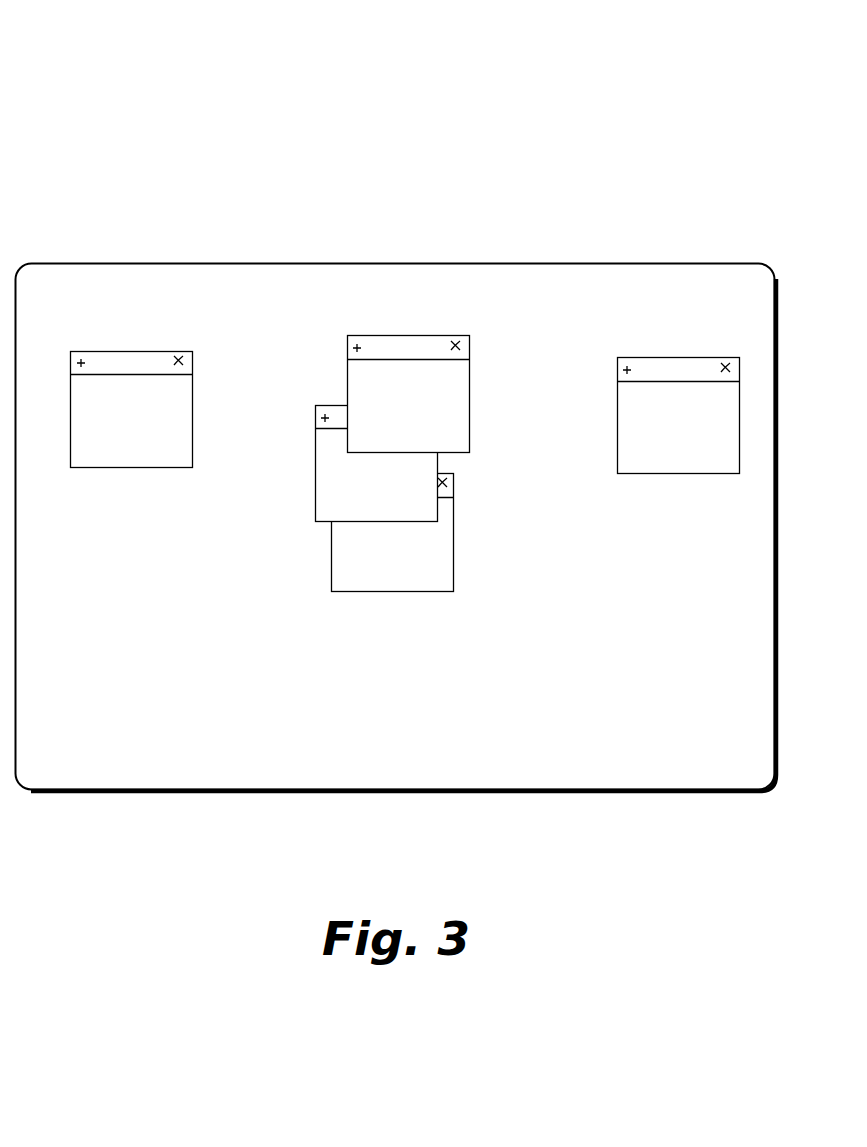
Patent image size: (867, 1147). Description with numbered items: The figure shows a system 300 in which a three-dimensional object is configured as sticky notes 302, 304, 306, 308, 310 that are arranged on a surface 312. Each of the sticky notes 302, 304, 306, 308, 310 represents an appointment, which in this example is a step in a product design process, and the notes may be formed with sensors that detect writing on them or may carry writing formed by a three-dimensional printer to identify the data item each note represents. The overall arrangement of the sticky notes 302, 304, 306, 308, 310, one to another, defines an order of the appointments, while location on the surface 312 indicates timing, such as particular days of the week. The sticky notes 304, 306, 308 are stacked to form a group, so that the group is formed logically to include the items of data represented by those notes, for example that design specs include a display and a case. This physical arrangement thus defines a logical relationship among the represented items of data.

The system 300 is at (141, 72).
The sticky note 302 is at (193, 409).
The sticky note 304 is at (347, 366).
The sticky note 306 is at (315, 461).
The sticky note 308 is at (331, 558).
The sticky note 310 is at (617, 413).
The surface 312 is at (396, 263).